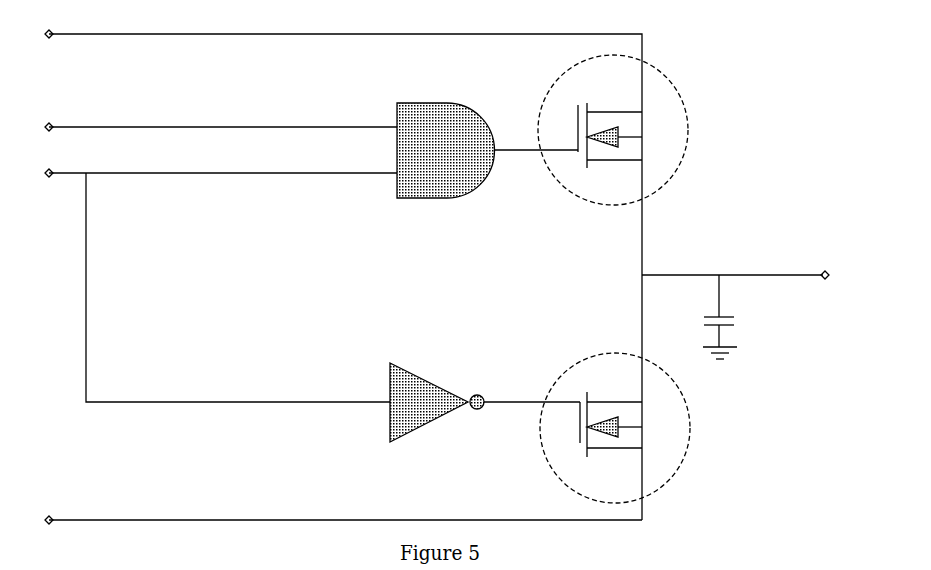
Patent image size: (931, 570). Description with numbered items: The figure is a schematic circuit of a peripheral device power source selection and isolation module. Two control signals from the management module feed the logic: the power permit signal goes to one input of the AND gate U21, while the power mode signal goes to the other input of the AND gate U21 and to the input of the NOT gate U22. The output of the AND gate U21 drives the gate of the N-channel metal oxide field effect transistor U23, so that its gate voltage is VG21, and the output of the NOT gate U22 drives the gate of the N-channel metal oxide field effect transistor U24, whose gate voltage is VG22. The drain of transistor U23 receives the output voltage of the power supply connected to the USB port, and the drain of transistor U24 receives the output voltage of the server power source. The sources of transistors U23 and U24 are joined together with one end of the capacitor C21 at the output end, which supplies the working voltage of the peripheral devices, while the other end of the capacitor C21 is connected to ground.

The AND gate U21 is at (446, 150).
The NOT gate U22 is at (437, 402).
The N-channel metal oxide field effect transistor U23 is at (613, 130).
The N-channel metal oxide field effect transistor U24 is at (615, 428).
The capacitor C21 is at (744, 317).
The gate voltage of U23 VG21 is at (528, 126).
The gate voltage of U24 VG22 is at (530, 422).